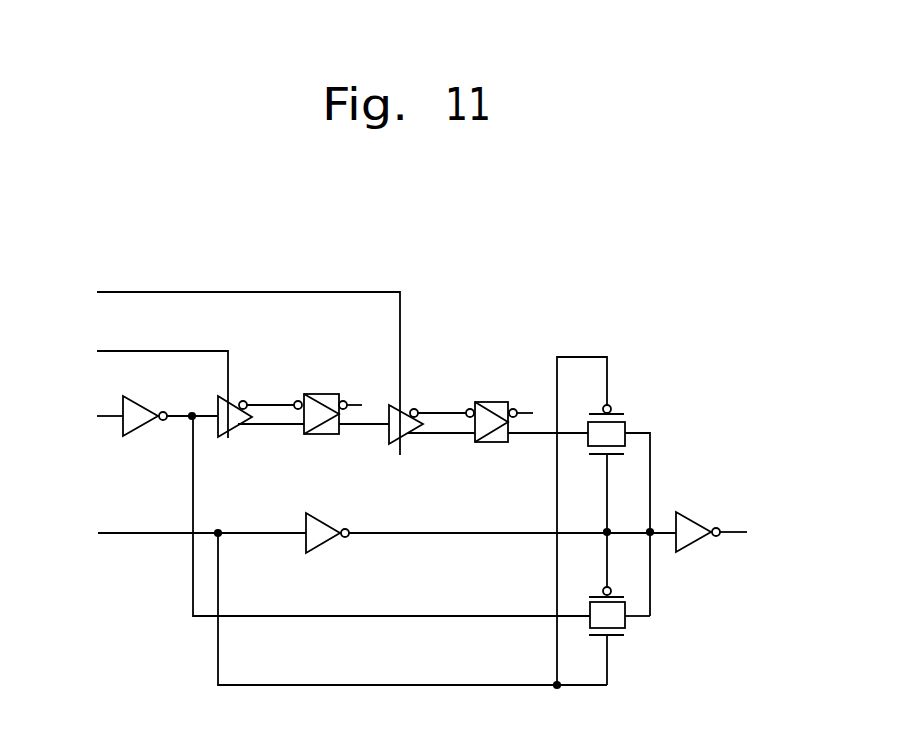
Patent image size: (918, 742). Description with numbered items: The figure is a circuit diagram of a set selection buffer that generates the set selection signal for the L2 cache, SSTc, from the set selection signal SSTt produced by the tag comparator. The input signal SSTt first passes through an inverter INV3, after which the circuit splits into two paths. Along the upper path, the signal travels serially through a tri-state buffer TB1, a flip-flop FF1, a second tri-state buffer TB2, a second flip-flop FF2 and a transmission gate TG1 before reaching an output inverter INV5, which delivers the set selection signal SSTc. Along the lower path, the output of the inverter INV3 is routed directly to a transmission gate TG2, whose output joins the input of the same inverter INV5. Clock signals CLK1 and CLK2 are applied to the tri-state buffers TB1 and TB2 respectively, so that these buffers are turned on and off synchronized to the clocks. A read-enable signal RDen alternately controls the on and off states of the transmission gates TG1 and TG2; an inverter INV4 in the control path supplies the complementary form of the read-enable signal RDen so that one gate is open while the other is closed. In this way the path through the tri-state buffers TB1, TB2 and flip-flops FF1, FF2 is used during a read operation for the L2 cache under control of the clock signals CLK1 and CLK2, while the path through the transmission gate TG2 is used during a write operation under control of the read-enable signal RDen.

The inverter INV3 is at (145, 437).
The tri-state buffer TB1 is at (260, 436).
The flip-flop FF1 is at (328, 429).
The tri-state buffer TB2 is at (407, 444).
The flip-flop FF2 is at (527, 438).
The transmission gate TG1 is at (610, 521).
The transmission gate TG2 is at (430, 550).
The inverter INV4 is at (325, 542).
The inverter INV5 is at (698, 546).
The clock signal CLK1 is at (134, 388).
The clock signal CLK2 is at (220, 367).
The set selection signal SSTt is at (83, 416).
The read-enable signal RDen is at (175, 533).
The set selection signal for the L2 cache SSTc is at (763, 532).